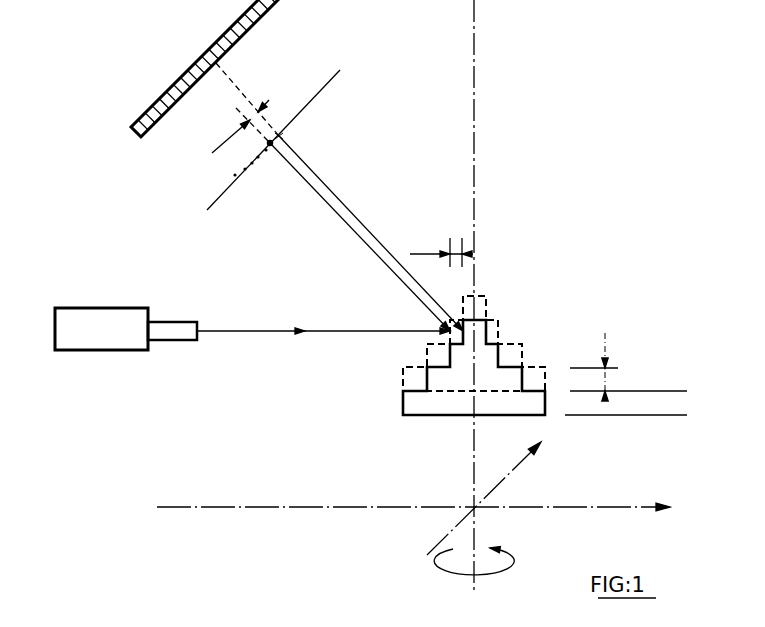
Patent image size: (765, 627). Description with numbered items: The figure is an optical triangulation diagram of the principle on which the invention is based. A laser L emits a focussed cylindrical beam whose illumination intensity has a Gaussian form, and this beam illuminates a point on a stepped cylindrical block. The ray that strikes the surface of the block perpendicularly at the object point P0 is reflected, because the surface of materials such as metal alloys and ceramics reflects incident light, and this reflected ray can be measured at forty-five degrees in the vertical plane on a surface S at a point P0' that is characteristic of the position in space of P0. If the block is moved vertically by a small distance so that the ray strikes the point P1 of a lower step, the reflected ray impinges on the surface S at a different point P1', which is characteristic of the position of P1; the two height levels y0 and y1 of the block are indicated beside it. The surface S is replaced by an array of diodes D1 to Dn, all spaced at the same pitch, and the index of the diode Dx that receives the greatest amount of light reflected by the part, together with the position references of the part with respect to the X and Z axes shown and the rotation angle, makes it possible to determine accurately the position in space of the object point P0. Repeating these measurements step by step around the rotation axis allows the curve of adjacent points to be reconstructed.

The laser L is at (252, 329).
The surface S is at (267, 140).
The first diode of the diode array D1 is at (210, 84).
The diode receiving the greatest amount of reflected light Dx is at (229, 87).
The last diode of the diode array Dn is at (300, 8).
The object point struck perpendicularly by the ray P0 is at (474, 350).
The point of a lower step P1 is at (450, 343).
The reflected ray impingement point for P0 P0' is at (369, 227).
The reflected ray impingement point for P1 P1' is at (356, 235).
The height level y1 is at (640, 391).
The height level y0 is at (638, 416).
The X position reference X is at (491, 498).
The Z position reference Z is at (413, 497).